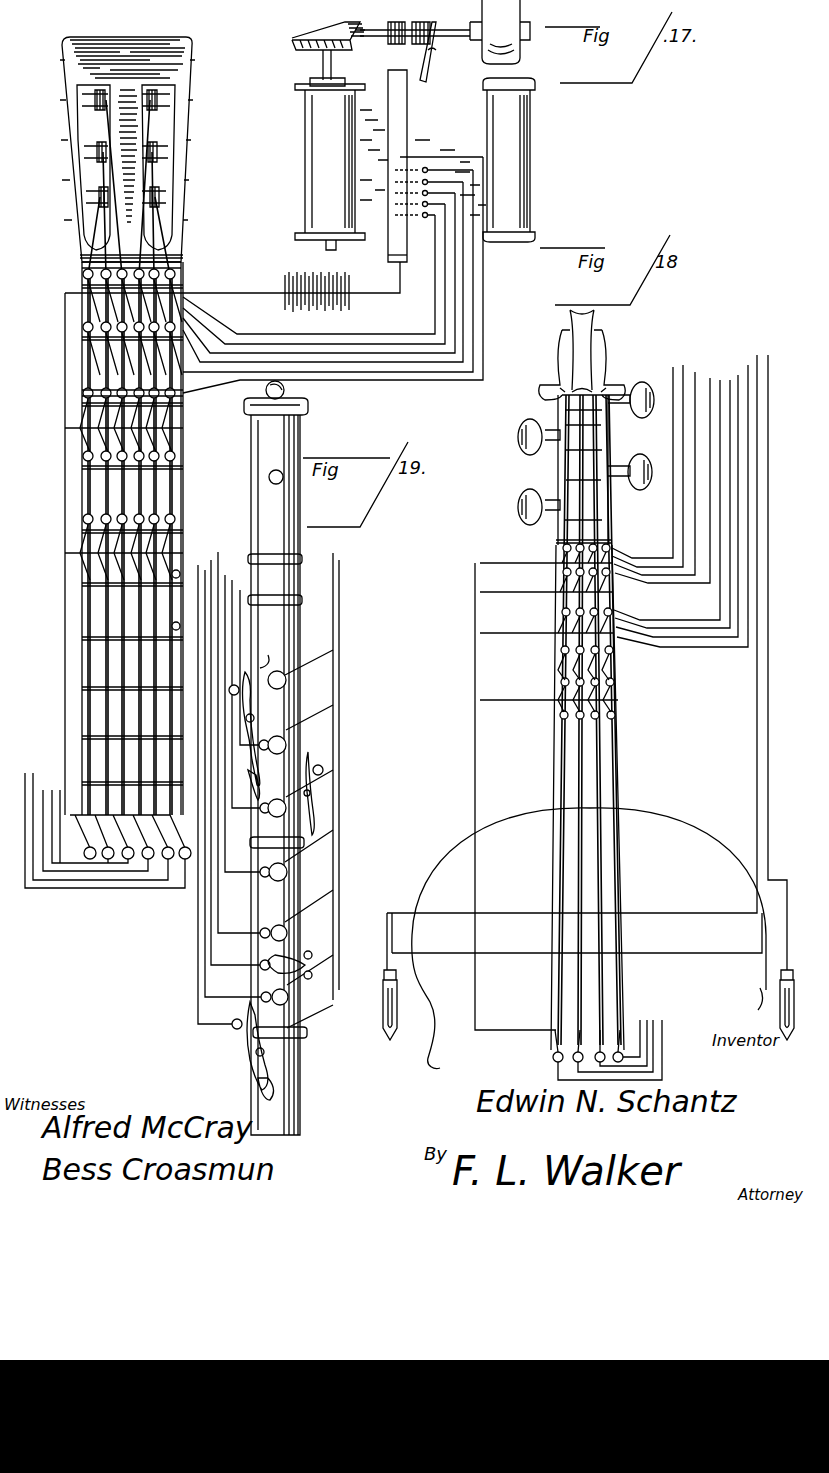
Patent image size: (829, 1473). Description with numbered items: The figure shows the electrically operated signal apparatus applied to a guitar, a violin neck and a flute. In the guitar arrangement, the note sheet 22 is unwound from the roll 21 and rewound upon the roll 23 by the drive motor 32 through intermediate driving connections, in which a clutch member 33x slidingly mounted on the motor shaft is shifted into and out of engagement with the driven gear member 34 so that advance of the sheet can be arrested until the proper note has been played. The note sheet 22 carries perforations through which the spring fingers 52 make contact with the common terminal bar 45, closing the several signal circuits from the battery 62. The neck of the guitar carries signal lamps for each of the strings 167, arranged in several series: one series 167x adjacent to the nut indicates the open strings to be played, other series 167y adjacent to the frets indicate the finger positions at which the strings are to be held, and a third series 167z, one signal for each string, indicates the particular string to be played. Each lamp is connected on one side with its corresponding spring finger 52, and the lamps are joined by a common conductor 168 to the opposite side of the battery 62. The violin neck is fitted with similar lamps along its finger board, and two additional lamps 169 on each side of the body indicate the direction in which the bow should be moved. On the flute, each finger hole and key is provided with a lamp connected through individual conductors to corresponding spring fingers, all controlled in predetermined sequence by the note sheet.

In FIG. 17, the roll 21 is at (536, 156).
In FIG. 17, the note sheet 22 is at (442, 98).
In FIG. 17, the roll 23 is at (318, 170).
In FIG. 17, the drive motor 32 is at (506, 32).
In FIG. 17, the clutch member 33x is at (401, 22).
In FIG. 17, the gear member 34 is at (448, 12).
In FIG. 17, the common terminal bar 45 is at (383, 262).
In FIG. 17, the spring fingers 52 is at (408, 178).
In FIG. 17, the battery 62 is at (292, 275).
In FIG. 17, the strings 167 is at (110, 494).
In FIG. 18, the strings 167 is at (610, 762).
In FIG. 17, the signal lamps adjacent to the nut 167x is at (84, 275).
In FIG. 19, the signal lamps adjacent to the nut 167x is at (262, 928).
In FIG. 18, the signal lamps adjacent to the nut 167x is at (556, 552).
In FIG. 17, the fret signal lamps 167y is at (82, 393).
In FIG. 18, the fret signal lamps 167y is at (556, 716).
In FIG. 17, the string signals 167z is at (106, 860).
In FIG. 18, the string signals 167z is at (553, 1058).
In FIG. 17, the common conductor 168 is at (237, 296).
In FIG. 19, the common conductor 168 is at (338, 748).
In FIG. 18, the common conductor 168 is at (474, 543).
In FIG. 18, the bowing lamps 169 is at (780, 1012).